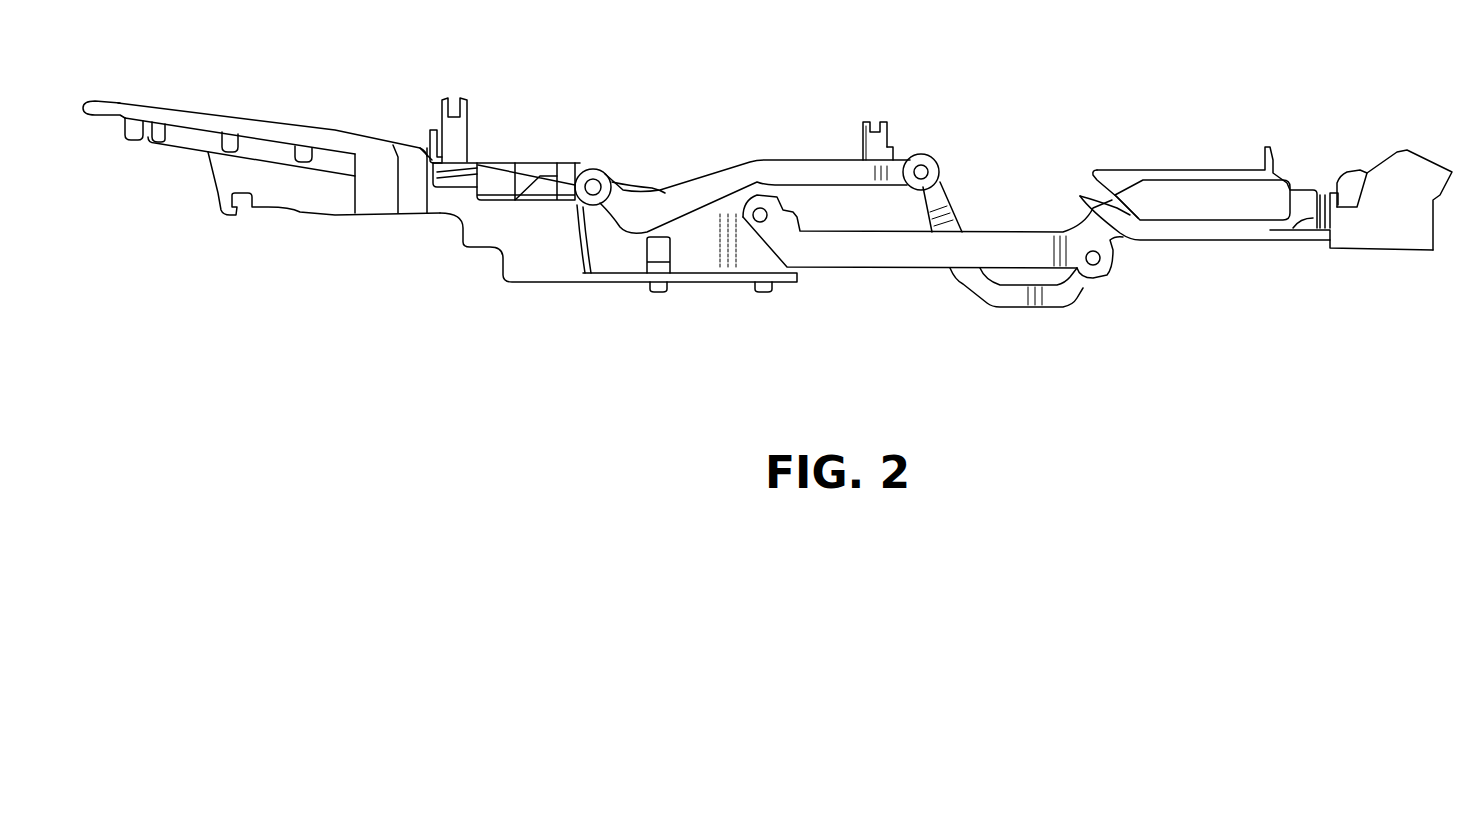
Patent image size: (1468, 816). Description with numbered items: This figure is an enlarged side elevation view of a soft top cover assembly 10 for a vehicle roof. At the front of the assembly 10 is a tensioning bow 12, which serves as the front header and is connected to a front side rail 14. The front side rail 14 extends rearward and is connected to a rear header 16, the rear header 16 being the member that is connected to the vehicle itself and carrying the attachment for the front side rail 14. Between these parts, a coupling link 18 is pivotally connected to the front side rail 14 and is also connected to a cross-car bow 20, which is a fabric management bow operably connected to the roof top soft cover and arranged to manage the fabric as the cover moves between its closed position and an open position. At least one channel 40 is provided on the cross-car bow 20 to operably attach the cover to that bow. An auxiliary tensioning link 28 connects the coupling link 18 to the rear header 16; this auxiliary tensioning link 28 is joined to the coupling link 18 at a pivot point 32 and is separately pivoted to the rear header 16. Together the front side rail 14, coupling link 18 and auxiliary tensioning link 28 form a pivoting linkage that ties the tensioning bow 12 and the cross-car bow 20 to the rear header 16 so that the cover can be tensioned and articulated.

The soft top cover assembly 10 is at (1233, 124).
The tensioning bow 12 is at (1363, 170).
The front side rail 14 is at (887, 258).
The rear header 16 is at (500, 266).
The coupling link 18 is at (1080, 295).
The cross-car bow 20 is at (868, 120).
The auxiliary tensioning link 28 is at (797, 158).
The pivot point 32 is at (927, 158).
The channel 40 is at (873, 118).